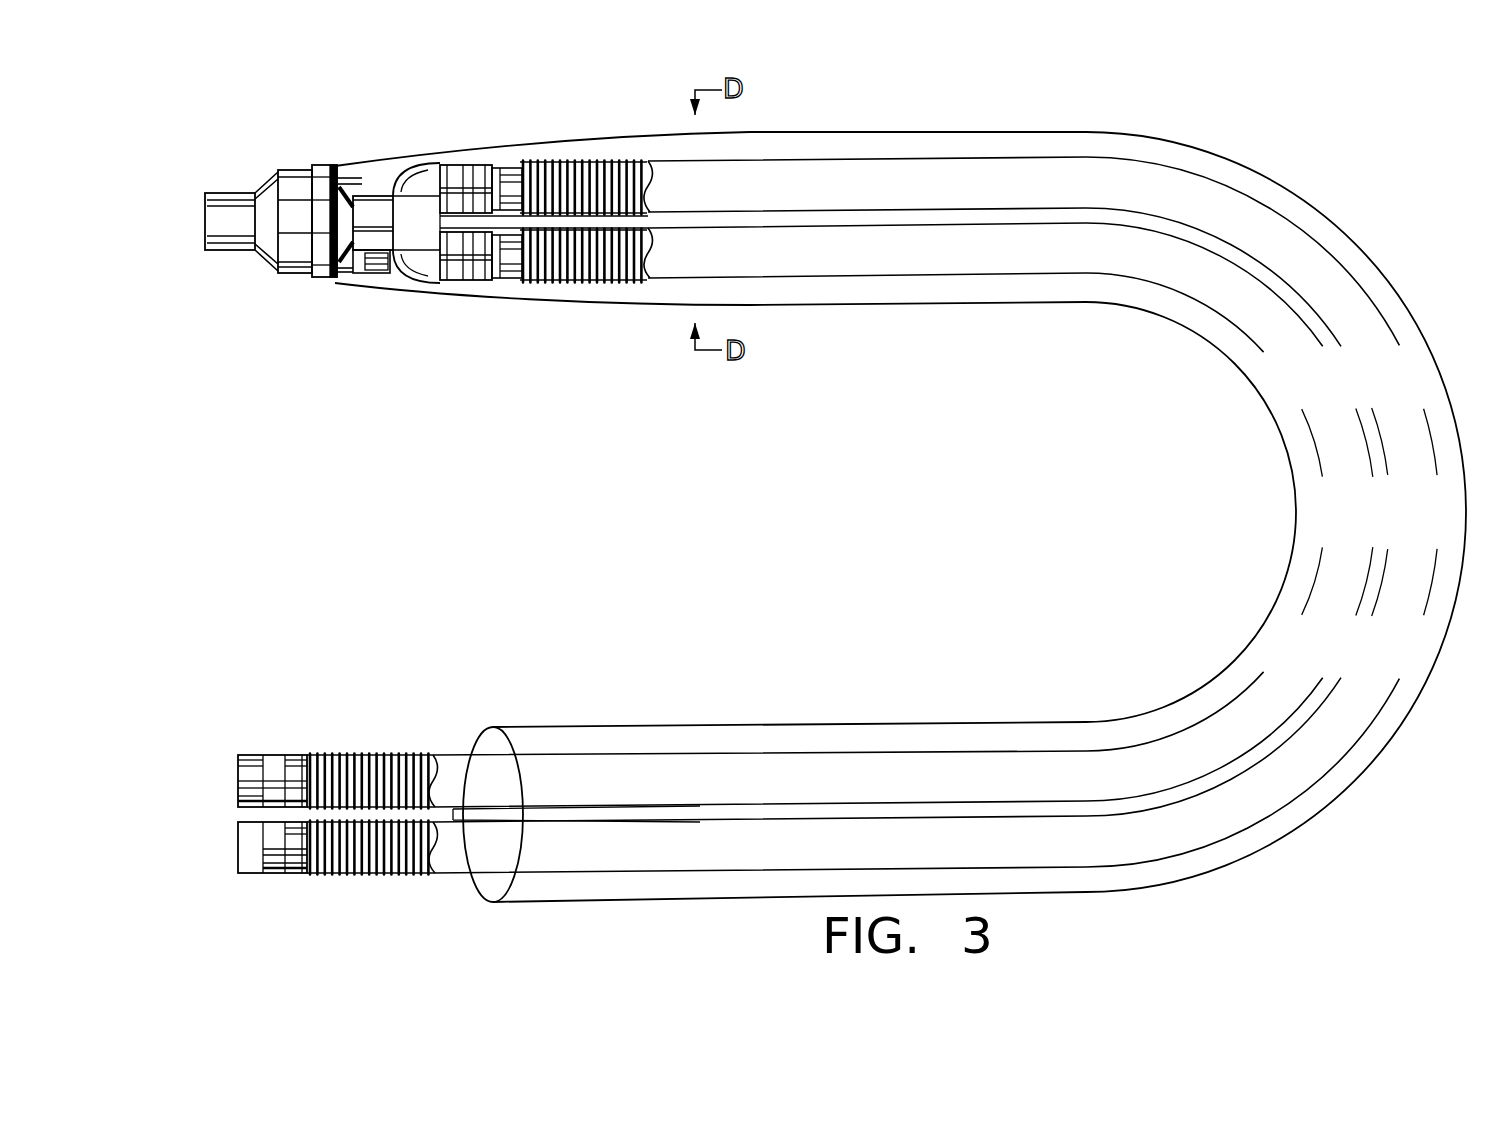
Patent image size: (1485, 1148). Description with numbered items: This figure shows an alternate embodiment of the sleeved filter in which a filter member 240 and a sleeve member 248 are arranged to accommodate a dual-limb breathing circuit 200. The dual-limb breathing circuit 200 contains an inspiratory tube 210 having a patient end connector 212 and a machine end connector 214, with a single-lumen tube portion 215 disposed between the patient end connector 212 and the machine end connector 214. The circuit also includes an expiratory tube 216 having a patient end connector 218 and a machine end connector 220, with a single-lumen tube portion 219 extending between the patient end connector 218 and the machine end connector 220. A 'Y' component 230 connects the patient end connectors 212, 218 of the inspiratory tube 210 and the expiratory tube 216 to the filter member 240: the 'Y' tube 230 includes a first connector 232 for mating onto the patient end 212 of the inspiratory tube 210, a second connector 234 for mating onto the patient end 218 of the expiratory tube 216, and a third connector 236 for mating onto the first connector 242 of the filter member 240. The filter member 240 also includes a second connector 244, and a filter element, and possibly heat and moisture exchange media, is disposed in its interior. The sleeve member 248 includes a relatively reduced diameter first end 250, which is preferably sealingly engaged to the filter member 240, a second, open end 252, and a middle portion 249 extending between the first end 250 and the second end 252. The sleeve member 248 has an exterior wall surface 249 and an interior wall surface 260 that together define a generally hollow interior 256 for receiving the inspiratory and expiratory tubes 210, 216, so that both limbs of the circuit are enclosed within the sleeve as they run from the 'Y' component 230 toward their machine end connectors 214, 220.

The dual-limb breathing circuit 200 is at (877, 225).
The inspiratory tube 210 is at (862, 212).
The patient end connector 212 is at (510, 170).
The machine end connector 214 is at (273, 822).
The single-lumen tube portion 215 is at (908, 213).
The expiratory tube 216 is at (778, 803).
The patient end connector 218 is at (500, 283).
The single-lumen tube portion 219 is at (1132, 223).
The machine end connector 220 is at (325, 757).
The 'Y' component 230 is at (418, 170).
The first connector 232 is at (465, 158).
The second connector 234 is at (463, 282).
The third connector 236 is at (384, 185).
The filter member 240 is at (280, 157).
The first connector 242 is at (358, 275).
The second connector 244 is at (249, 193).
The sleeve member 248 is at (1375, 172).
The middle portion 249 is at (1340, 223).
The first end 250 is at (259, 256).
The second end 252 is at (477, 873).
The hollow interior 256 is at (823, 227).
The interior wall surface 260 is at (1127, 133).